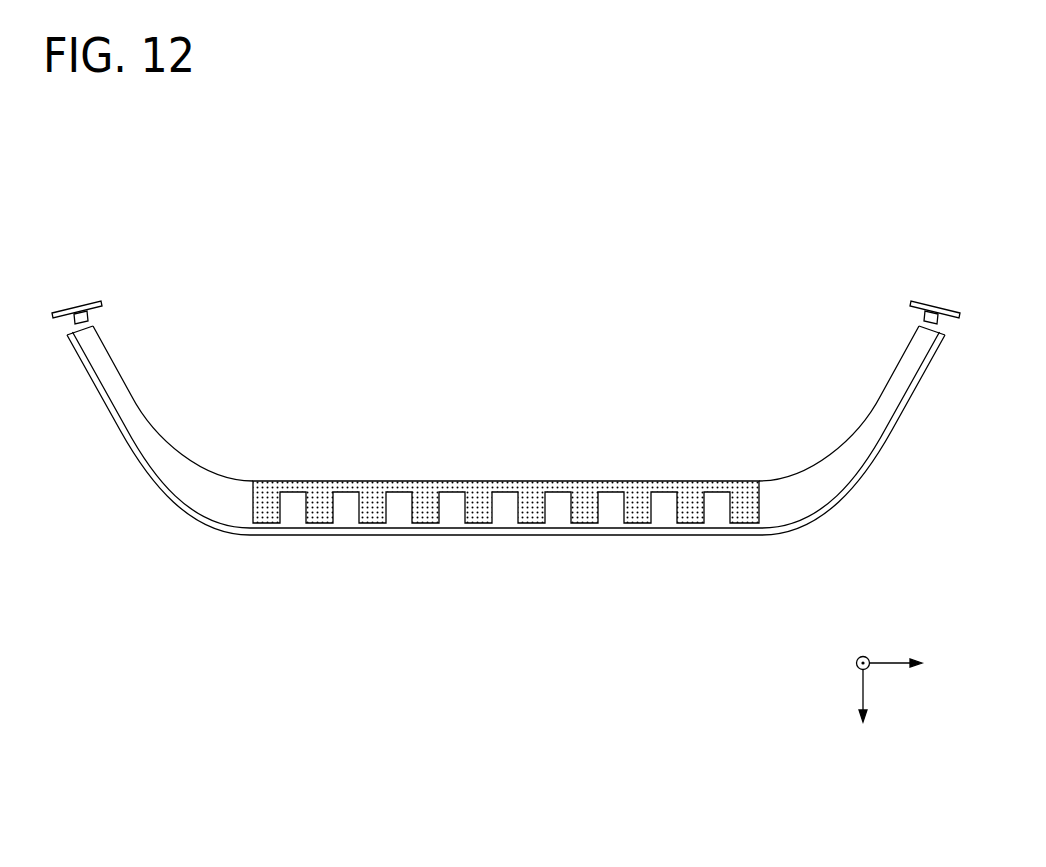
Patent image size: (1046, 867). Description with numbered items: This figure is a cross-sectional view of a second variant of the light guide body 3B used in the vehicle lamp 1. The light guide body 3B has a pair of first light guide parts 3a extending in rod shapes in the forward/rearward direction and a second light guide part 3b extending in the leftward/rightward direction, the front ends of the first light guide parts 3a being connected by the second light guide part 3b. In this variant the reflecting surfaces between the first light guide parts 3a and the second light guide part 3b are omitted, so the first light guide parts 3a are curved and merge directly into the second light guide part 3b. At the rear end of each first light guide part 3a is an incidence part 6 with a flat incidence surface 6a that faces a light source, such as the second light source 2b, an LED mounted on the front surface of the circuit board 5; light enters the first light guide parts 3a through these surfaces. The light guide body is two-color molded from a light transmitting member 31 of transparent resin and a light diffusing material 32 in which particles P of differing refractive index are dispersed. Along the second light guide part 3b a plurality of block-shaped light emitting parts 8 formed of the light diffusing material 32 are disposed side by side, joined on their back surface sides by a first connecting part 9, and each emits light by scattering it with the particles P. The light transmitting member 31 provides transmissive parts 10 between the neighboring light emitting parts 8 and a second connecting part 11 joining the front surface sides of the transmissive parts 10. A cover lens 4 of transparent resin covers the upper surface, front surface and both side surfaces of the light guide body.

The vehicle lamp 1 is at (197, 202).
The second light source 2b is at (76, 311).
The circuit board 5 is at (96, 301).
The incidence part 6 is at (506, 354).
The incidence surface 6a is at (85, 330).
The first light guide part 3a is at (123, 403).
The light transmitting member 31 is at (508, 490).
The light diffusing material 32 is at (707, 490).
The light guide body 3B is at (492, 462).
The particles P is at (533, 486).
The transmissive part 10 is at (720, 507).
The first connecting part 9 is at (717, 489).
The light emitting part 8 is at (692, 505).
The second connecting part 11 is at (690, 525).
The cover lens 4 is at (420, 537).
The second light guide part 3b is at (533, 532).